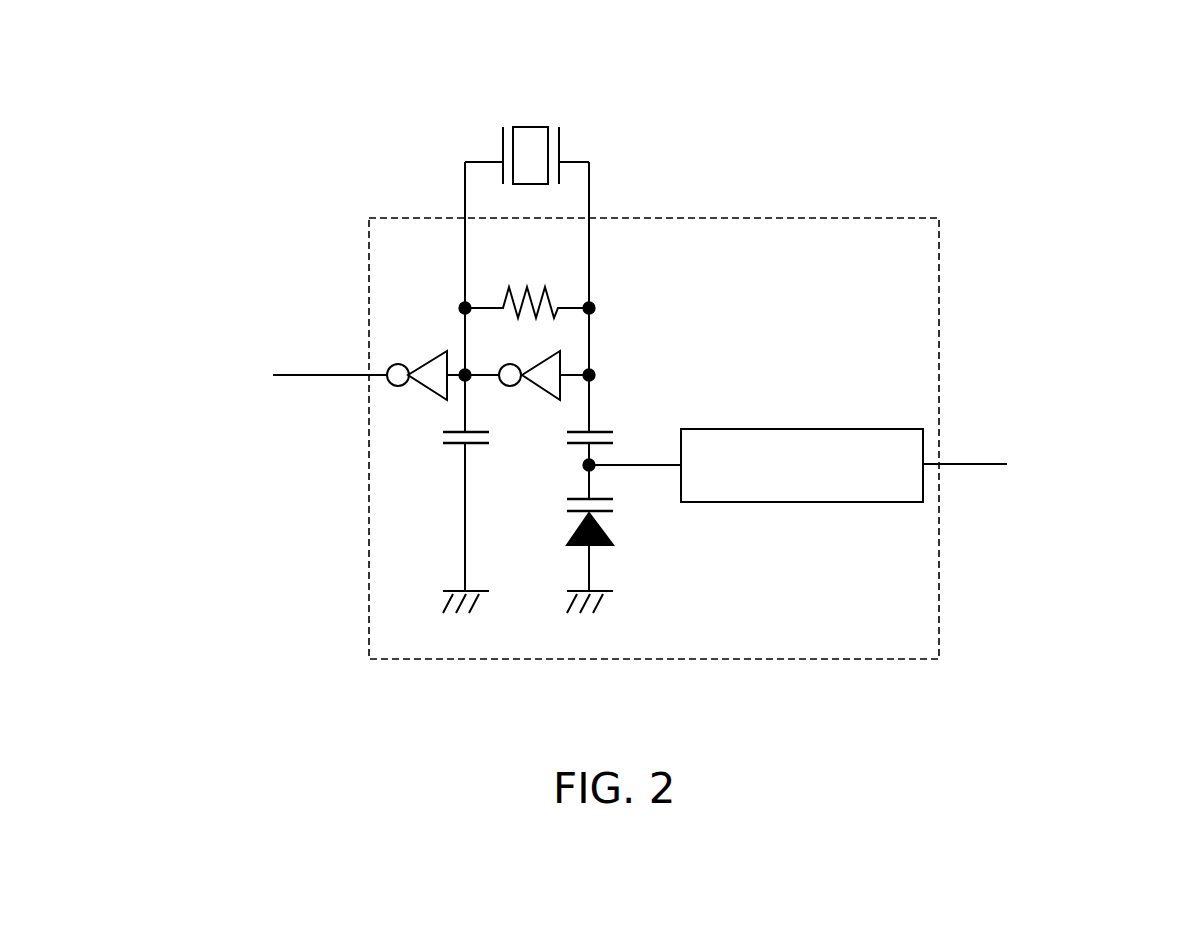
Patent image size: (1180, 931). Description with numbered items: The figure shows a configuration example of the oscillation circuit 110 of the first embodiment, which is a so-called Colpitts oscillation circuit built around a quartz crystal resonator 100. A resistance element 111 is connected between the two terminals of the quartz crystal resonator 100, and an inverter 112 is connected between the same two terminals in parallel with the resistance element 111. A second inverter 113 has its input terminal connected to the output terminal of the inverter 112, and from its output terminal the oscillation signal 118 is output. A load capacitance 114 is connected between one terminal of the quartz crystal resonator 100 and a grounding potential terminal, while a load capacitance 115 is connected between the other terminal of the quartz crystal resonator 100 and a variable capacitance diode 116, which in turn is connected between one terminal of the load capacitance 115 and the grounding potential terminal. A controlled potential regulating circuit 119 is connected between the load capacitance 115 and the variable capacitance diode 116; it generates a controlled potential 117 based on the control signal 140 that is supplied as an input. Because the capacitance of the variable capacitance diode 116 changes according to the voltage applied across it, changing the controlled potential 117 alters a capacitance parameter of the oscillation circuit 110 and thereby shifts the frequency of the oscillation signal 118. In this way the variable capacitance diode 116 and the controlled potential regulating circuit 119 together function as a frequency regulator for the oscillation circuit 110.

The quartz crystal resonator 100 is at (521, 127).
The oscillation circuit 110 is at (367, 263).
The resistance element 111 is at (553, 296).
The inverter 112 is at (560, 363).
The inverter 113 is at (440, 355).
The load capacitance 114 is at (443, 432).
The load capacitance 115 is at (613, 432).
The variable capacitance diode 116 is at (603, 522).
The controlled potential 117 is at (641, 467).
The oscillation signal 118 is at (295, 380).
The controlled potential regulating circuit 119 is at (833, 503).
The control signal 140 is at (953, 464).